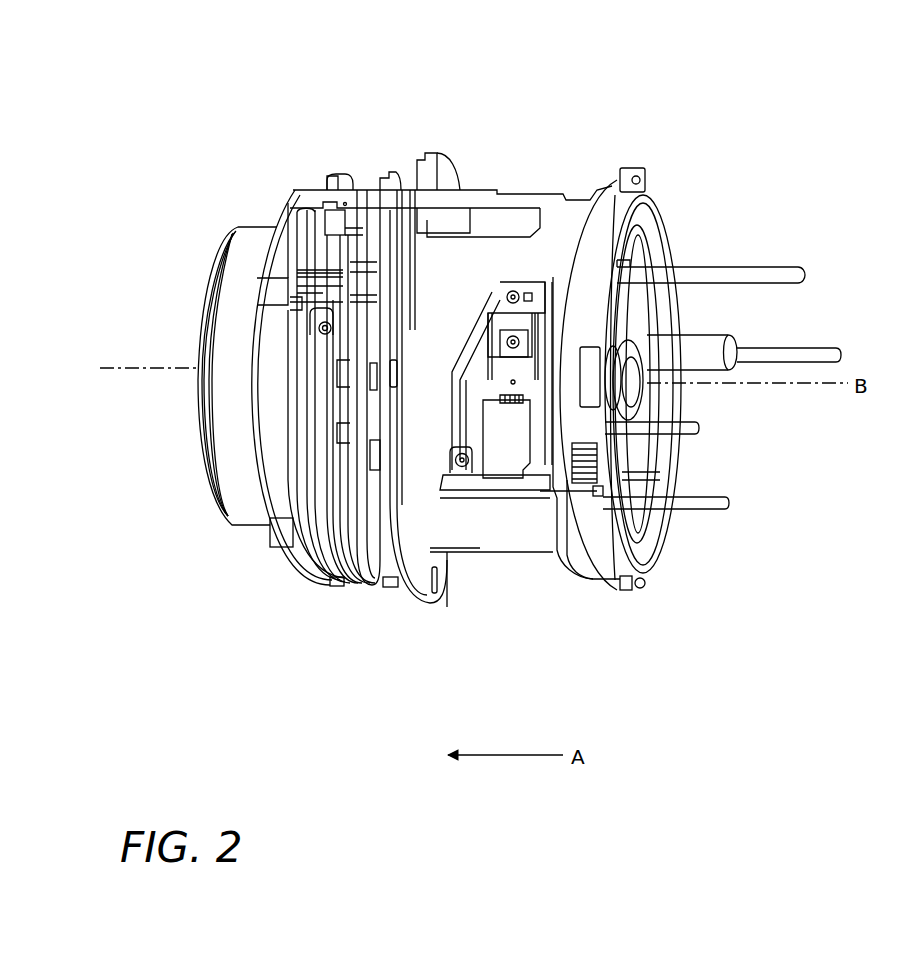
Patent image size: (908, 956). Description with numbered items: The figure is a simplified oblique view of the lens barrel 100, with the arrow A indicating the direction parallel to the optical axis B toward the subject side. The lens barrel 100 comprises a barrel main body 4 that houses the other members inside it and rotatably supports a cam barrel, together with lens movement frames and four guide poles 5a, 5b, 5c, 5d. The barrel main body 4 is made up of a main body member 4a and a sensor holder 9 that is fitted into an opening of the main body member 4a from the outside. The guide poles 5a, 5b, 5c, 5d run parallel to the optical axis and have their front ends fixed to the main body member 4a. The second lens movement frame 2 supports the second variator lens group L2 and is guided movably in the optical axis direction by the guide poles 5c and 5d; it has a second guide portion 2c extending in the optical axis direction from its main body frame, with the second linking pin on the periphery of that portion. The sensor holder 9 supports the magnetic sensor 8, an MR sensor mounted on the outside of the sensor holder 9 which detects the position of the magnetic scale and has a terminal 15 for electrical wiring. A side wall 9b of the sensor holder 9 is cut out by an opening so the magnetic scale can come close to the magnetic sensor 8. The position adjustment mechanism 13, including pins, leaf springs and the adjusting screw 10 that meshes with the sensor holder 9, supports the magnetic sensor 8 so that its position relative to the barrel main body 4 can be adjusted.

The lens barrel 100 is at (696, 104).
The barrel main body 4 is at (512, 166).
The main body member 4a is at (605, 203).
The second lens movement frame 2 is at (667, 307).
The second guide portion 2c is at (720, 347).
The guide pole 5a is at (783, 273).
The guide pole 5b is at (715, 510).
The guide pole 5c is at (827, 357).
The guide pole 5d is at (693, 427).
The second variator lens group L2 is at (654, 394).
The magnetic sensor 8 is at (525, 443).
The sensor holder 9 is at (510, 448).
The side wall 9b is at (488, 325).
The adjusting screw 10 is at (512, 338).
The position adjustment mechanism 13 is at (476, 383).
The terminal 15 is at (506, 409).